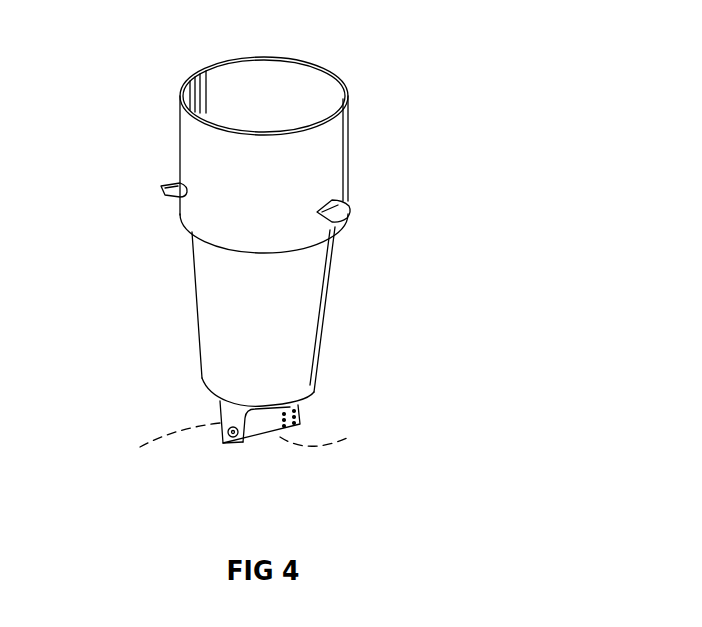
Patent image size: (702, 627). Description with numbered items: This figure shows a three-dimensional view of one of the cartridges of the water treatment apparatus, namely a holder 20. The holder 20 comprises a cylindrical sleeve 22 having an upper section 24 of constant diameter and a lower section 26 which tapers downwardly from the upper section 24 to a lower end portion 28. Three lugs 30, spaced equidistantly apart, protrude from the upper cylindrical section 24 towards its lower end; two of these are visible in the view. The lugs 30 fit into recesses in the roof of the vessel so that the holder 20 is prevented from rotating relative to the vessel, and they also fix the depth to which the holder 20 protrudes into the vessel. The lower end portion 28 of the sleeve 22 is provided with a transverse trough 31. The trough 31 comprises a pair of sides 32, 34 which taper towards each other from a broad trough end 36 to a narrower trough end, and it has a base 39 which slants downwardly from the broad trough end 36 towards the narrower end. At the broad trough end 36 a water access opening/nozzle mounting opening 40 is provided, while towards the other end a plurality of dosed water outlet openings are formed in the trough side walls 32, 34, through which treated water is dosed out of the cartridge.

The holder 20 is at (493, 153).
The cylindrical sleeve 22 is at (415, 267).
The upper section 24 is at (313, 153).
The lower section 26 is at (205, 302).
The lower end portion 28 is at (318, 383).
The lugs 30 is at (163, 187).
The transverse trough 31 is at (192, 417).
The trough side 32 is at (163, 444).
The trough side 34 is at (258, 430).
The broad trough end 36 is at (228, 446).
The trough base 39 is at (331, 436).
The water access opening/nozzle mounting opening 40 is at (228, 437).